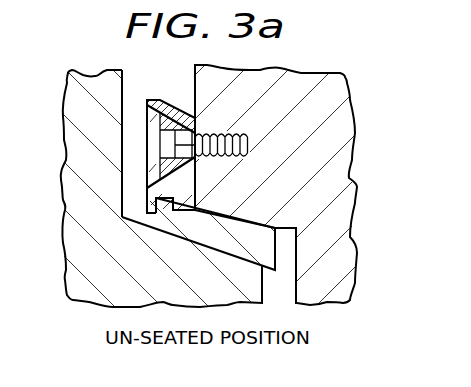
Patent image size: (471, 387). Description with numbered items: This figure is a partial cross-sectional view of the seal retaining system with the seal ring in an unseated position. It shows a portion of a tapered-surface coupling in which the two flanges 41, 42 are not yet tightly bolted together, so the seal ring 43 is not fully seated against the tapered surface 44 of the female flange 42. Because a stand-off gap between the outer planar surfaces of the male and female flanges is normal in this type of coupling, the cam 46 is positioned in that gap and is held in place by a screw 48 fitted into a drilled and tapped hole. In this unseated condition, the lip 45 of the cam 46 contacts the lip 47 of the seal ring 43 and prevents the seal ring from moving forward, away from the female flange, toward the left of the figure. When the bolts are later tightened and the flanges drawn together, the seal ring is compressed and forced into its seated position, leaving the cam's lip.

The flange 41 is at (63, 193).
The flange 42 is at (350, 142).
The seal ring 43 is at (216, 250).
The tapered surface 44 is at (289, 236).
The lip 45 is at (135, 210).
The cam 46 is at (183, 111).
The lip 47 is at (182, 203).
The screw 48 is at (225, 130).